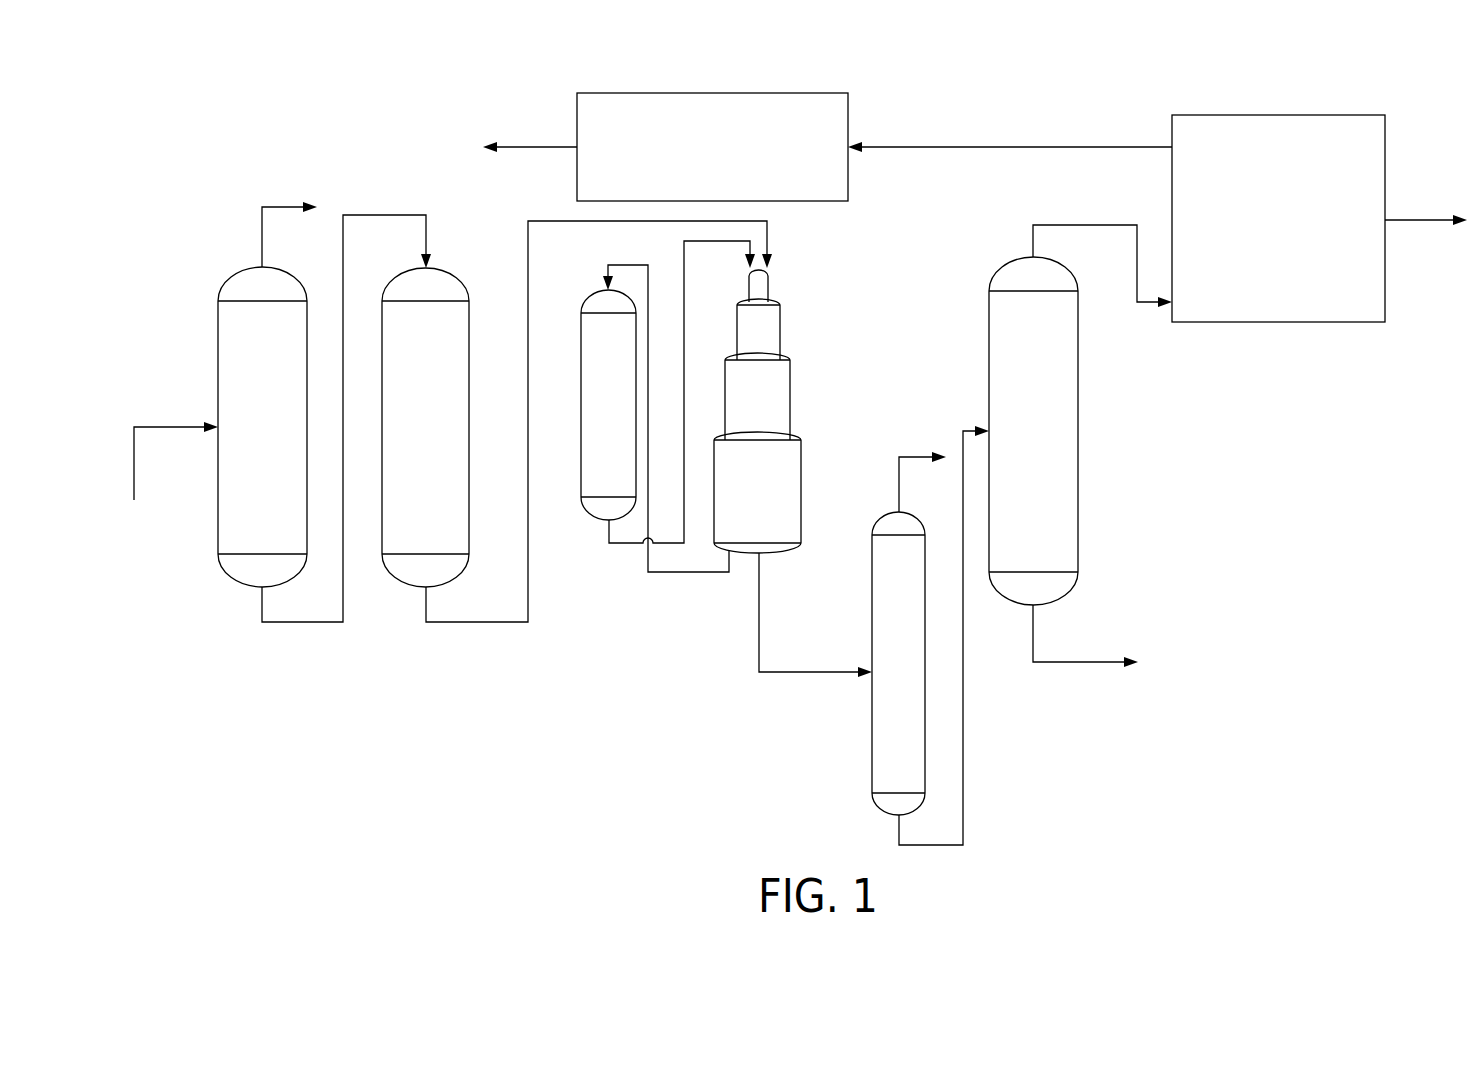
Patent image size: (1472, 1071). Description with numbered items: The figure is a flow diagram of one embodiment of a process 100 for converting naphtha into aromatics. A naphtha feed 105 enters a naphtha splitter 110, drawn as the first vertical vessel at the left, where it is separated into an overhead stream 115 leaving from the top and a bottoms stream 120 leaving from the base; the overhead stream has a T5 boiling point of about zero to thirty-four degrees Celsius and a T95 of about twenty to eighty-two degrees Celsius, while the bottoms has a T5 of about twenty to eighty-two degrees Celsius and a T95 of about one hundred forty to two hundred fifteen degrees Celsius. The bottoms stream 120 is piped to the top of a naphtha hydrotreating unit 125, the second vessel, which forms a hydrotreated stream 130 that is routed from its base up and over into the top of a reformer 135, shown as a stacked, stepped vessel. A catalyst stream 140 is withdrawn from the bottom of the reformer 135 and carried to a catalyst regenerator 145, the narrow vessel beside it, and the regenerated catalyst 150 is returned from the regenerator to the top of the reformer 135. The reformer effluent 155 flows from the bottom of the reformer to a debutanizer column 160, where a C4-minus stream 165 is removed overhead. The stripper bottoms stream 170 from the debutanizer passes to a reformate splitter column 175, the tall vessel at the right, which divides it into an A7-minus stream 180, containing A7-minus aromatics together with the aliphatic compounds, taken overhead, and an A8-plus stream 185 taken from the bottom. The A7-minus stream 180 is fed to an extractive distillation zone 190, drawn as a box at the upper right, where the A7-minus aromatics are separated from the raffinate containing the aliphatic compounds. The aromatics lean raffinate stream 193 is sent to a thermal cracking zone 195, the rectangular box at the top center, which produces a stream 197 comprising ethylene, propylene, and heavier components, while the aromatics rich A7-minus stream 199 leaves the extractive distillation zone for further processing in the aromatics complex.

The process 100 is at (235, 152).
The naphtha feed 105 is at (165, 427).
The naphtha splitter 110 is at (218, 341).
The overhead stream 115 is at (262, 238).
The bottoms stream 120 is at (262, 612).
The naphtha hydrotreating unit 125 is at (443, 268).
The hydrotreated stream 130 is at (426, 612).
The reformer 135 is at (777, 299).
The catalyst stream 140 is at (689, 575).
The catalyst regenerator 145 is at (597, 291).
The regenerated catalyst 150 is at (623, 545).
The reformer effluent 155 is at (757, 663).
The debutanizer column 160 is at (883, 512).
The C4- stream 165 is at (908, 457).
The stripper bottoms stream 170 is at (963, 797).
The reformate splitter column 175 is at (997, 268).
The A7- stream 180 is at (1053, 224).
The A8+ stream 185 is at (1079, 662).
The extractive distillation zone 190 is at (1358, 115).
The aromatics lean raffinate stream 193 is at (1002, 147).
The thermal cracking zone 195 is at (830, 93).
The stream comprising ethylene, propylene, and heavier components 197 is at (523, 147).
The aromatics rich A7- stream 199 is at (1418, 220).